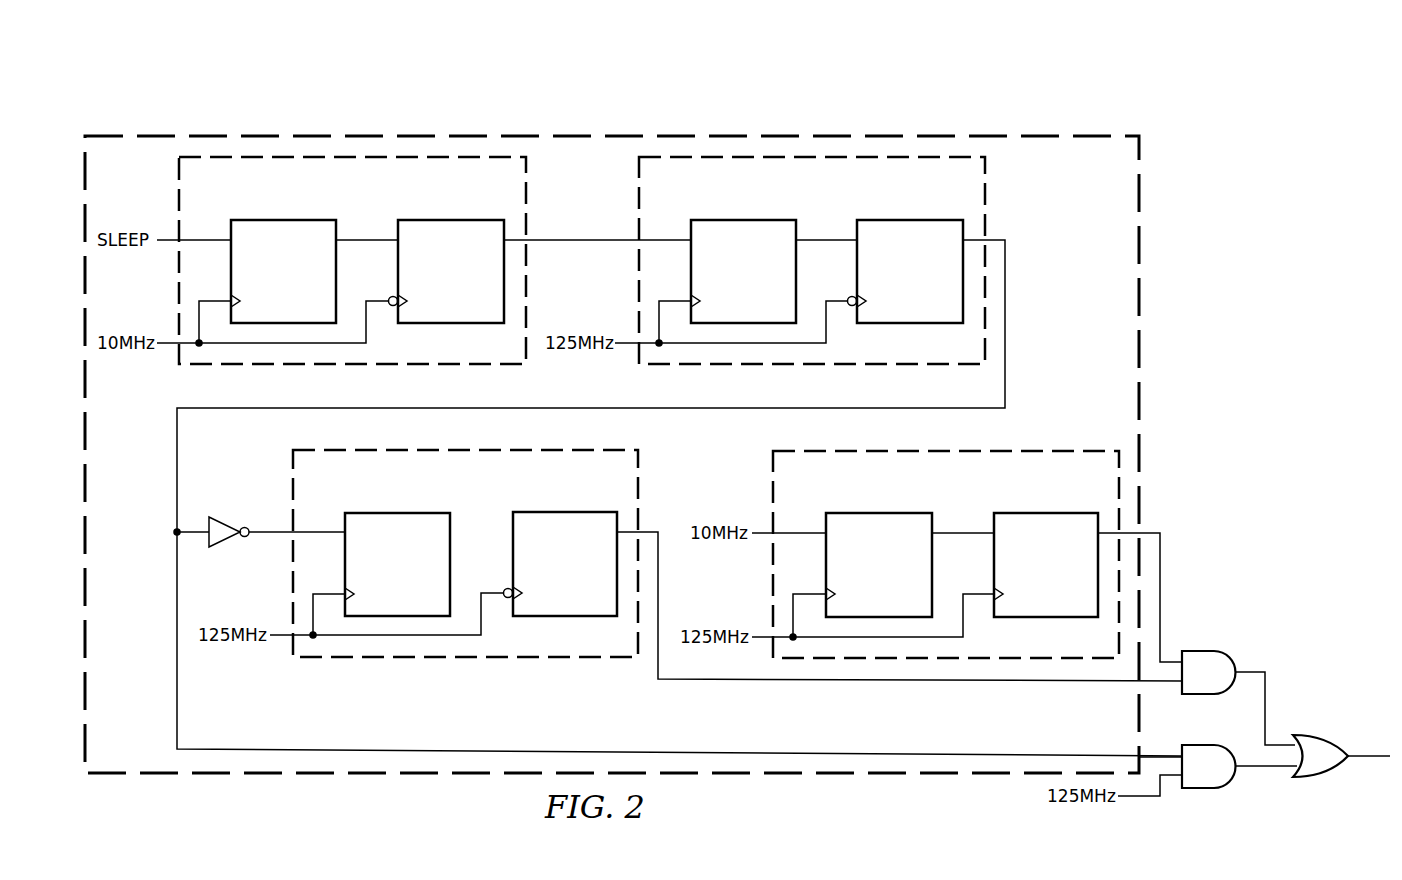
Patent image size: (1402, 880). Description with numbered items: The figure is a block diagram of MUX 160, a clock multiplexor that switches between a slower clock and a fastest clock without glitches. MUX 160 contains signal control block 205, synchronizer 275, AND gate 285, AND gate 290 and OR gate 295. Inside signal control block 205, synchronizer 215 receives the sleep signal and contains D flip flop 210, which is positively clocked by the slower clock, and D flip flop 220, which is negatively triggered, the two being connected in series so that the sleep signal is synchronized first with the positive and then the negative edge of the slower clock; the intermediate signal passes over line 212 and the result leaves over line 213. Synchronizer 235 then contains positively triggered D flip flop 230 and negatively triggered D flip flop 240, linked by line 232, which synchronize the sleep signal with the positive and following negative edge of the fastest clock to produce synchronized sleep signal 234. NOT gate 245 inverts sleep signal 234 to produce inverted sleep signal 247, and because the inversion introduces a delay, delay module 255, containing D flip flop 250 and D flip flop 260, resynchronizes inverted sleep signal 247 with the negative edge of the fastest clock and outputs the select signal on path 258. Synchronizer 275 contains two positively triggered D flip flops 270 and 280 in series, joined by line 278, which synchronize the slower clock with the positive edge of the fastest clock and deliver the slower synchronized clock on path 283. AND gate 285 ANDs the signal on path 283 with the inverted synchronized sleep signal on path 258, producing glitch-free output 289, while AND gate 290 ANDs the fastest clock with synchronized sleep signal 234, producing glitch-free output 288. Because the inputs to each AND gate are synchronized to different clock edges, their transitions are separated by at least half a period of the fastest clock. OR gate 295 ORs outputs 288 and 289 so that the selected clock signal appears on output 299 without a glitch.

The MUX 160 is at (1231, 256).
The signal control block 205 is at (290, 771).
The D flip flop 210 is at (282, 220).
The first flip-flop output line 212 is at (377, 240).
The second flip-flop output line 213 is at (585, 240).
The synchronizer 215 is at (179, 186).
The D flip flop 220 is at (450, 220).
The D flip flop 230 is at (742, 220).
The third flip-flop output line 232 is at (815, 240).
The synchronized sleep signal 234 is at (675, 750).
The synchronizer 235 is at (985, 185).
The D flip flop 240 is at (912, 220).
The NOT gate 245 is at (230, 546).
The inverted sleep signal 247 is at (270, 532).
The fifth D flip-flop 250 is at (396, 513).
The delay module 255 is at (338, 657).
The path 258 is at (918, 680).
The sixth D flip-flop 260 is at (565, 512).
The D flip flop 270 is at (878, 513).
The synchronizer 275 is at (1073, 451).
The seventh flip-flop output line 278 is at (953, 533).
The D flip flop 280 is at (1047, 513).
The path 283 is at (1160, 565).
The AND gate 285 is at (1203, 651).
The output 288 is at (1264, 769).
The output 289 is at (1265, 710).
The AND gate 290 is at (1200, 788).
The OR gate 295 is at (1310, 778).
The output 299 is at (1368, 755).